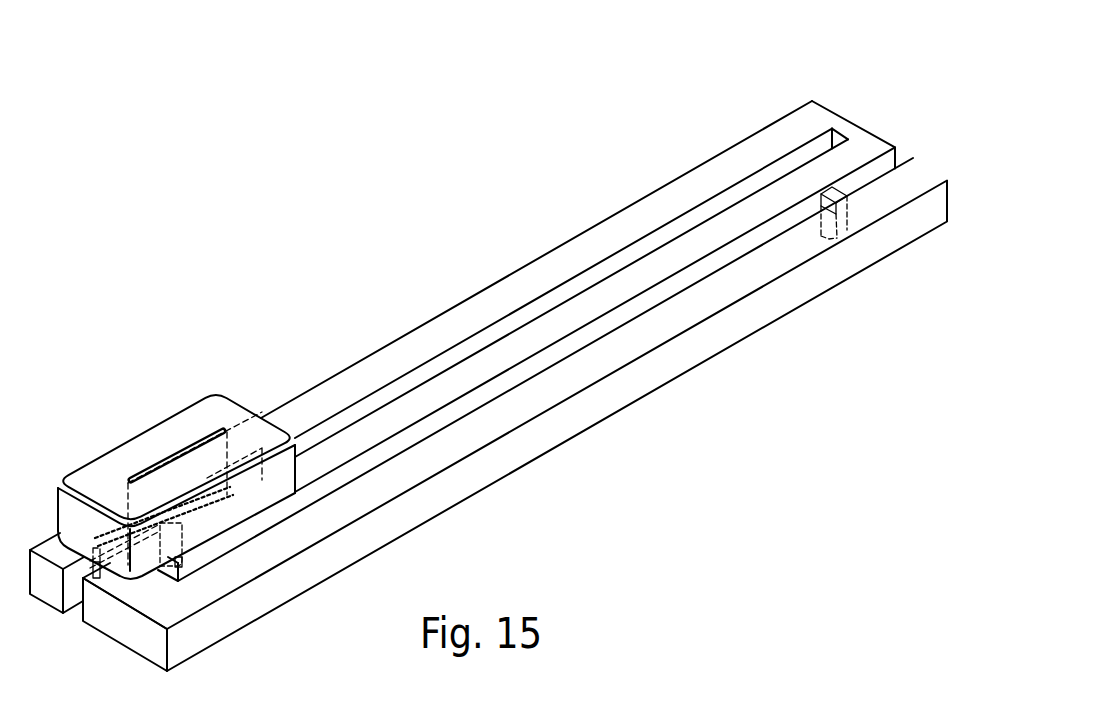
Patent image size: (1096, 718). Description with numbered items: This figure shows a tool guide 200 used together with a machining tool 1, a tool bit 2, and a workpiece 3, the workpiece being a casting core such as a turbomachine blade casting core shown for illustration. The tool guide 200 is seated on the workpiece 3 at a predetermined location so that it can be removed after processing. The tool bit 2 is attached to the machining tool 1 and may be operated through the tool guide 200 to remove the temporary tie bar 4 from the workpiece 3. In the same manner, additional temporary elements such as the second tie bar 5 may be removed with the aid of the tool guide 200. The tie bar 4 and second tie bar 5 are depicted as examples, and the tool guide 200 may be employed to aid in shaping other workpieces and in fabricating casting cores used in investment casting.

The machining tool 1 is at (155, 462).
The tool bit 2 is at (210, 509).
The workpiece 3 is at (845, 118).
The temporary tie bar 4 is at (184, 538).
The second tie bar 5 is at (842, 193).
The tool guide 200 is at (255, 393).